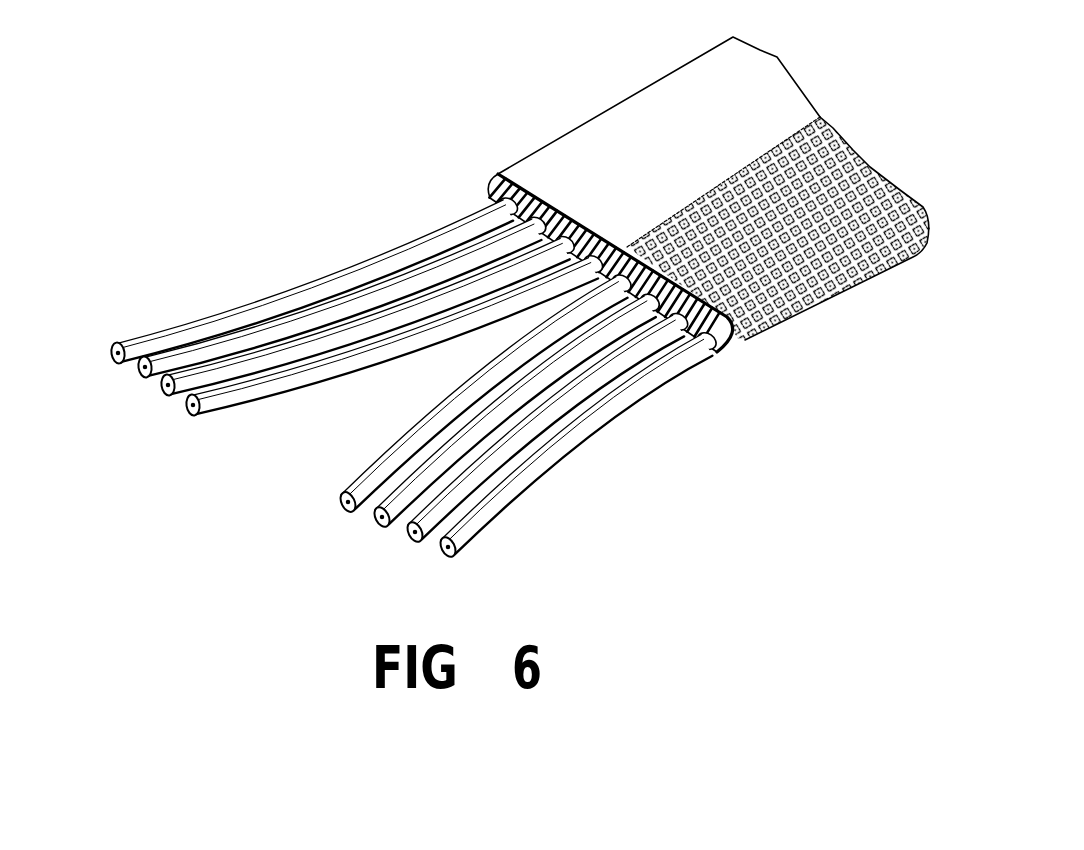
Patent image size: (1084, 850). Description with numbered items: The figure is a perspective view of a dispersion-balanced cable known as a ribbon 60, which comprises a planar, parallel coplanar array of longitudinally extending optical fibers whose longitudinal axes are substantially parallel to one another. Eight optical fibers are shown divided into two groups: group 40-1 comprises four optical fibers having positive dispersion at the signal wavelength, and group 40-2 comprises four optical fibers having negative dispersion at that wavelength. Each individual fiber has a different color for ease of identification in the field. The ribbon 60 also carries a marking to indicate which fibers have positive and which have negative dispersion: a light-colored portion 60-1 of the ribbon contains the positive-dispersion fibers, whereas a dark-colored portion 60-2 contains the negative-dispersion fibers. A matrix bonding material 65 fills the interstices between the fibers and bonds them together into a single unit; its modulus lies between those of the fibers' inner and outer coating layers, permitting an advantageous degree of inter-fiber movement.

The ribbon 60 is at (685, 186).
The light-colored portion 60-1 is at (594, 130).
The dark-colored portion 60-2 is at (851, 157).
The matrix bonding material 65 is at (492, 192).
The group of positive-dispersion optical fibers 40-1 is at (178, 425).
The group of negative-dispersion optical fibers 40-2 is at (444, 569).